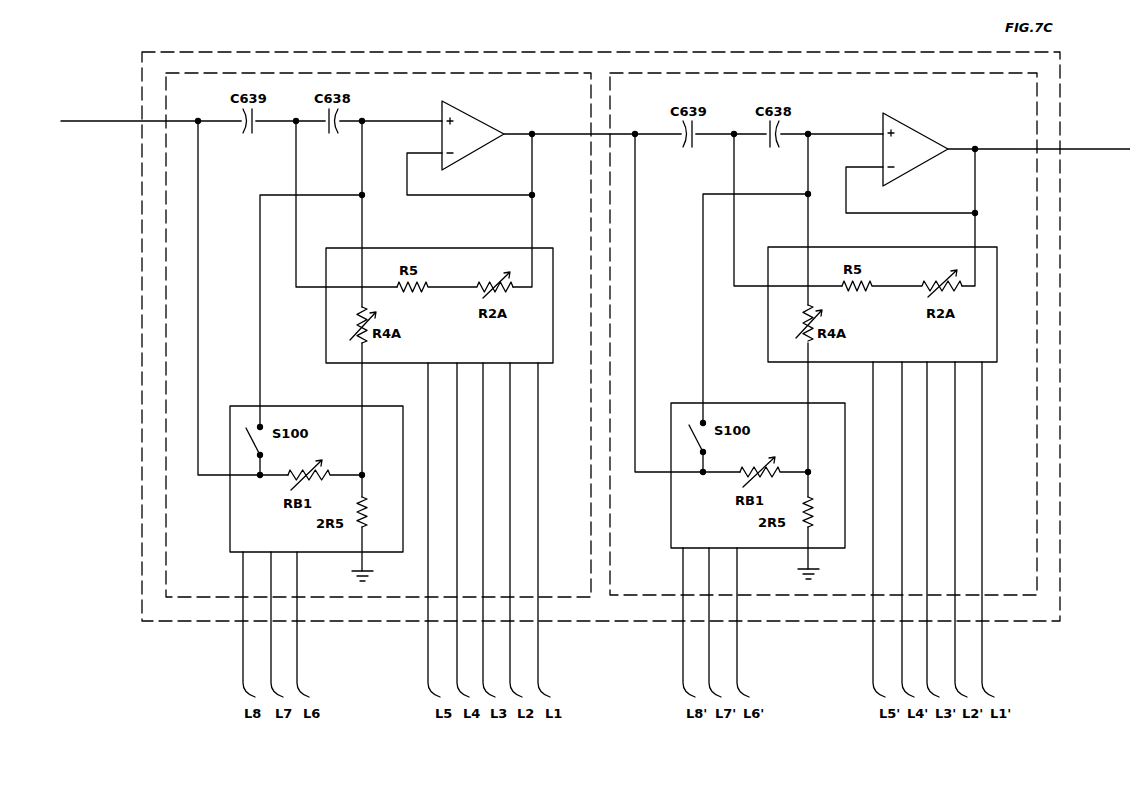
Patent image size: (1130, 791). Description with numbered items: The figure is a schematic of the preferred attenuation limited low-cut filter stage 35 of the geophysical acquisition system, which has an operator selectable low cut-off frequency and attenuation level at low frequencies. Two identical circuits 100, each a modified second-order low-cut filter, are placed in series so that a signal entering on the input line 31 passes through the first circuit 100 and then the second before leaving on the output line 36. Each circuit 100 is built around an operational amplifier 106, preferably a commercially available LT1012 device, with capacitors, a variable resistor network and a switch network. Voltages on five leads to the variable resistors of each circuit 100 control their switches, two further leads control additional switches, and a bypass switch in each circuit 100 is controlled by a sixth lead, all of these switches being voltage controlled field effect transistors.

The input signal line 31 is at (93, 123).
The attenuation limited low-cut filter stage 35 is at (642, 51).
The output signal line 36 is at (1112, 146).
The circuit 100 is at (272, 70).
The operational amplifier 106 is at (484, 122).